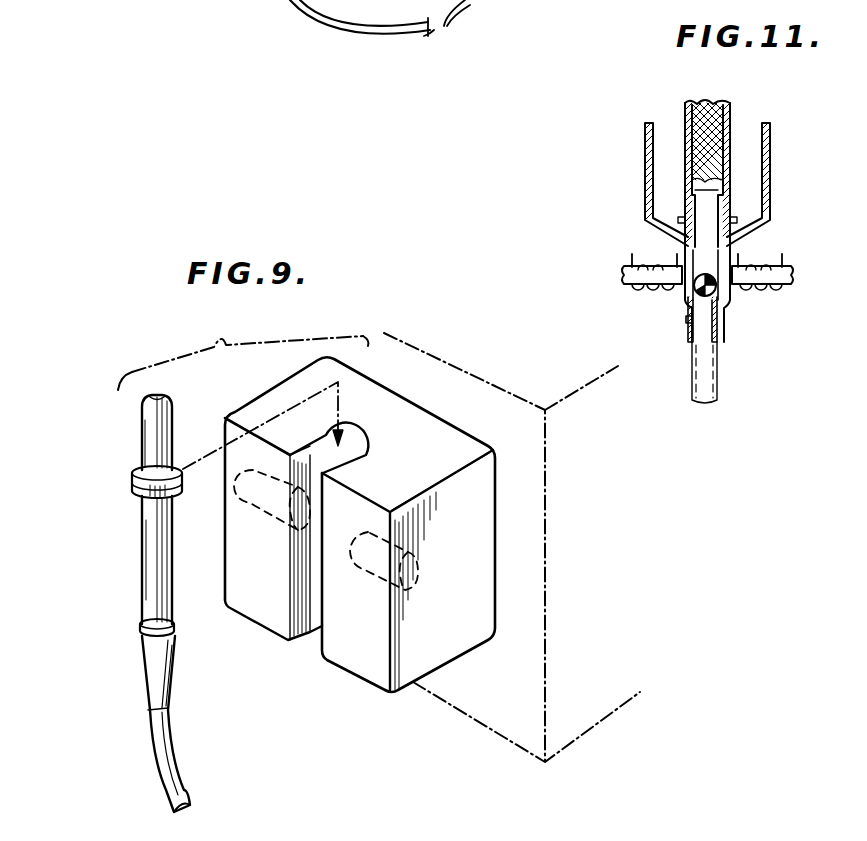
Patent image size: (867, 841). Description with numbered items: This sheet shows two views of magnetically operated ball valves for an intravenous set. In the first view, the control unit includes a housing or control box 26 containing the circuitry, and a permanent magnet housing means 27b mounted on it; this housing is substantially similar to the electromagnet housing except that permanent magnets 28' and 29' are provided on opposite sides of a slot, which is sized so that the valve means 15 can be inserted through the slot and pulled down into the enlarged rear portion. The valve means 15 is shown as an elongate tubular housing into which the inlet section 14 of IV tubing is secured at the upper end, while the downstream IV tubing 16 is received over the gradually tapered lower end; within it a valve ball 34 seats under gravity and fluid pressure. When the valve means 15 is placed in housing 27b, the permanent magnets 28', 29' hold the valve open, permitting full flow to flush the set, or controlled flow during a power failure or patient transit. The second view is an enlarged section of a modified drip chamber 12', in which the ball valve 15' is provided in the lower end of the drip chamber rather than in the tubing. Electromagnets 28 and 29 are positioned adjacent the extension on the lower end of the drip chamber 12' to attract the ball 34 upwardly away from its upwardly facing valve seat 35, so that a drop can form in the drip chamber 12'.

In FIG. 9, the inlet section of IV tubing 14 is at (142, 440).
In FIG. 9, the valve means 15 is at (129, 545).
In FIG. 9, the IV tubing 16 is at (152, 757).
In FIG. 9, the valve ball 34 is at (156, 612).
In FIG. 11, the valve ball 34 is at (716, 290).
In FIG. 9, the housing or control box 26 is at (572, 740).
In FIG. 9, the permanent magnet housing means 27b is at (350, 676).
In FIG. 9, the permanent magnet 28' is at (272, 531).
In FIG. 9, the permanent magnet 29' is at (378, 589).
In FIG. 11, the modified drip chamber 12' is at (743, 200).
In FIG. 11, the electromagnet 28 is at (624, 254).
In FIG. 11, the electromagnet 29 is at (784, 254).
In FIG. 11, the ball valve 15' is at (660, 326).
In FIG. 11, the valve seat 35 is at (693, 323).